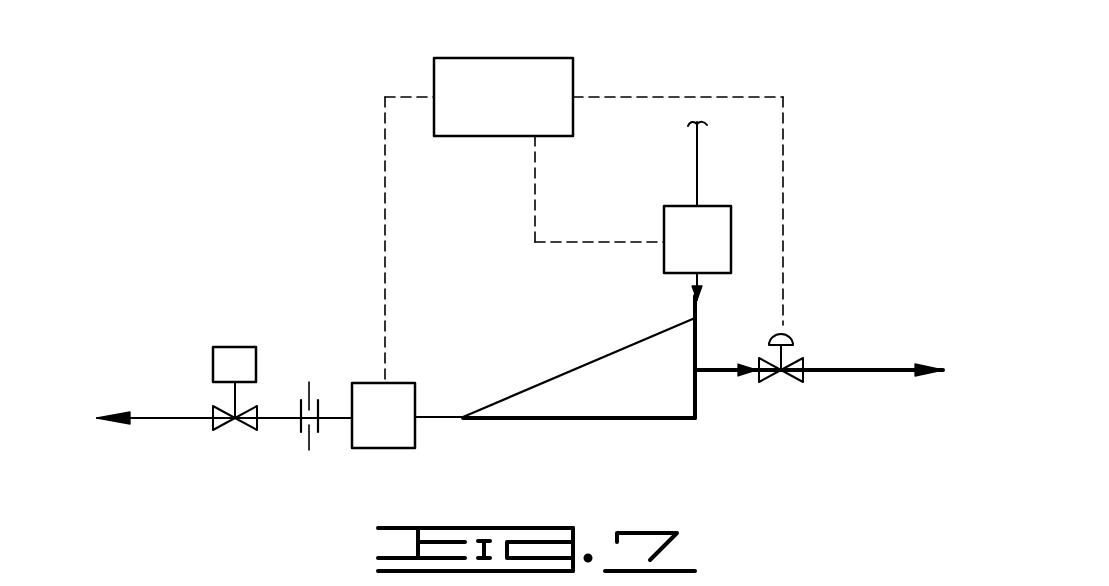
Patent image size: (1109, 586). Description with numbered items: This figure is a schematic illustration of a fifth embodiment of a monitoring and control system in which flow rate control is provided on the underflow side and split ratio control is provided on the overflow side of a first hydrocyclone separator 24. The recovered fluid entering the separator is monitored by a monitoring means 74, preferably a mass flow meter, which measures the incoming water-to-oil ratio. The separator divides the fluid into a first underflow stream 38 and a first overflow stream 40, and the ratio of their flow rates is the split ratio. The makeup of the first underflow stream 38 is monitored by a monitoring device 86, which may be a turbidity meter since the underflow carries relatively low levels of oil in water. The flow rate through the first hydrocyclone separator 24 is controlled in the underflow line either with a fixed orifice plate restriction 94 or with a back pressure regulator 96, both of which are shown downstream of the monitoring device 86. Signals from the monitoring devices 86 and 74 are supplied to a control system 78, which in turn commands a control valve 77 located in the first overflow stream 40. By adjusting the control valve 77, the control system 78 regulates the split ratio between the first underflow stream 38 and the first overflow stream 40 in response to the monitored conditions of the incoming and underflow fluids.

The control system 78 is at (535, 58).
The monitoring means 74 is at (724, 206).
The first hydrocyclone separator 24 is at (612, 366).
The first underflow stream 38 is at (437, 412).
The monitoring device 86 is at (388, 442).
The fixed orifice plate restriction 94 is at (309, 442).
The back pressure regulator 96 is at (242, 424).
The control valve 77 is at (803, 365).
The first overflow stream 40 is at (853, 372).